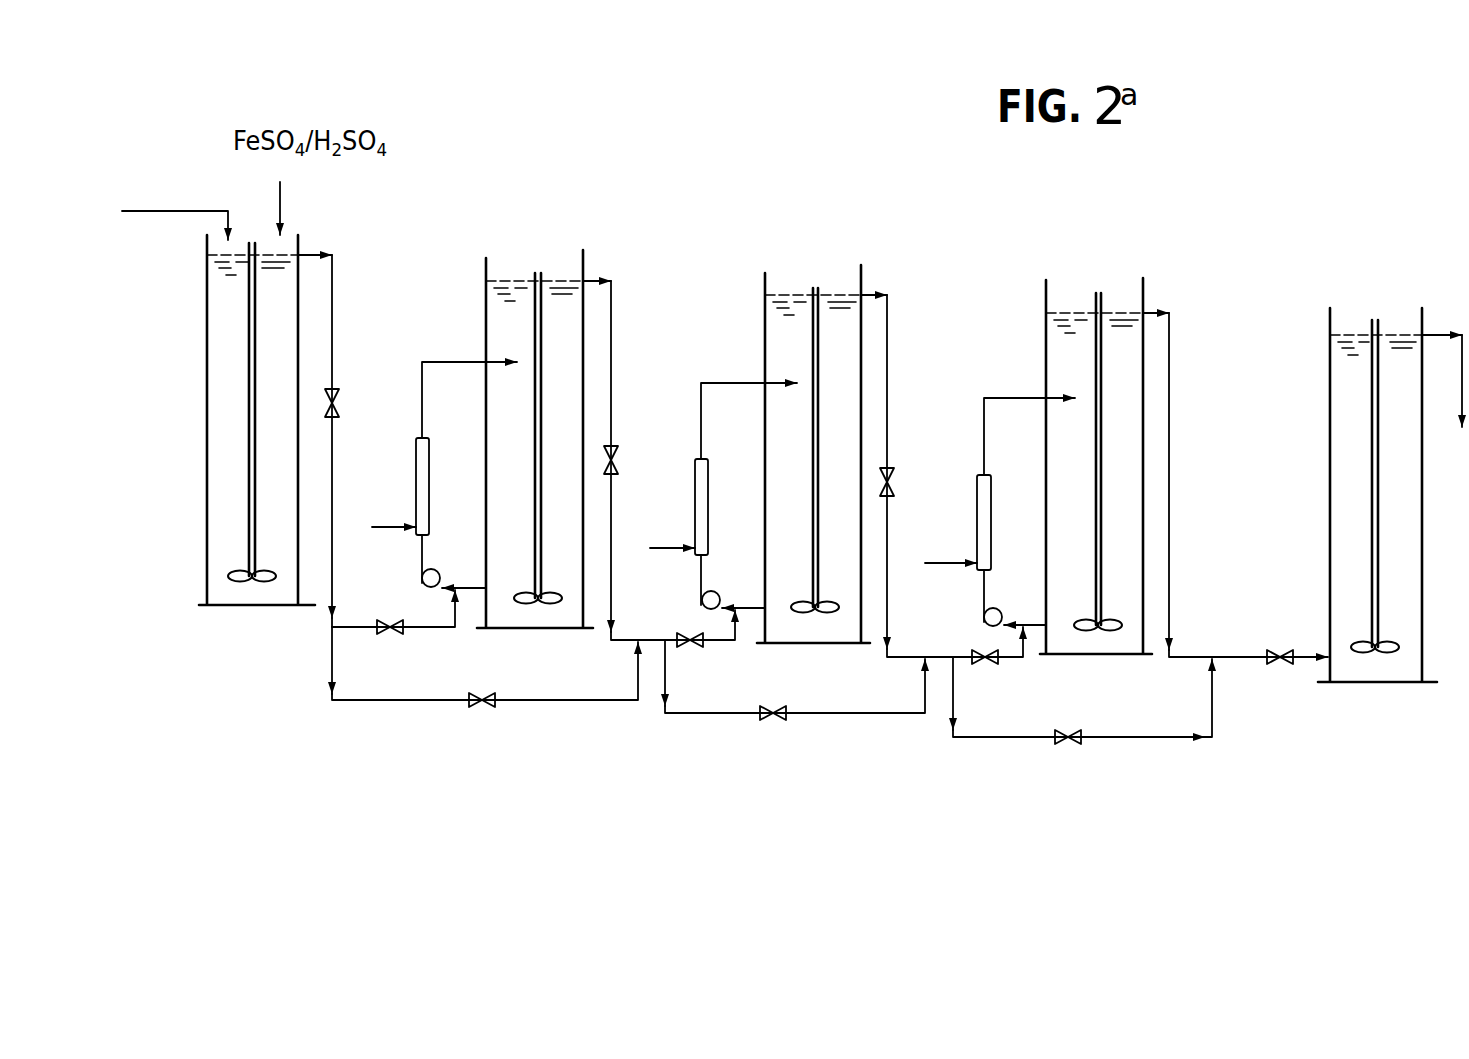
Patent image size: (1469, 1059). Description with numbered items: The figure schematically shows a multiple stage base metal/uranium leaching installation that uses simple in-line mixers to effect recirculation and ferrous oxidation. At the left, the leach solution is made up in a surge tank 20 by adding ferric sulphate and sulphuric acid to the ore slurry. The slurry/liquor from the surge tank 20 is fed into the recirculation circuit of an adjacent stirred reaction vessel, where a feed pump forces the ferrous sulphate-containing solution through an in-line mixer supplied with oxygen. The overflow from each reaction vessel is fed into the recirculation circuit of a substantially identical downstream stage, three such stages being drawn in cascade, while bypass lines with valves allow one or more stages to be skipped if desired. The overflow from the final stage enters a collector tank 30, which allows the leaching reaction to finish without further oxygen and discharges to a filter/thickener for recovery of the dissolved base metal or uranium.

The surge tank 20 is at (205, 366).
The collector tank 30 is at (1330, 415).